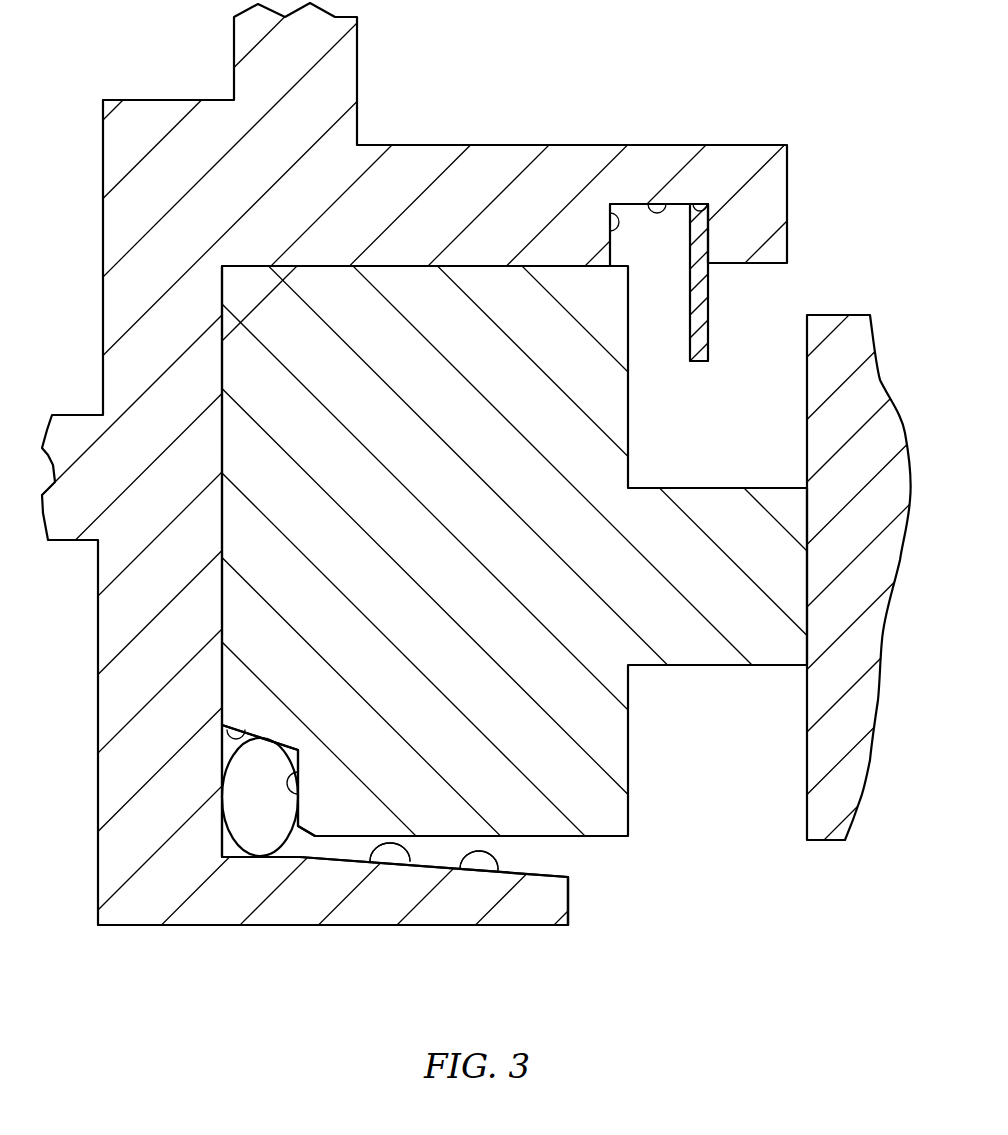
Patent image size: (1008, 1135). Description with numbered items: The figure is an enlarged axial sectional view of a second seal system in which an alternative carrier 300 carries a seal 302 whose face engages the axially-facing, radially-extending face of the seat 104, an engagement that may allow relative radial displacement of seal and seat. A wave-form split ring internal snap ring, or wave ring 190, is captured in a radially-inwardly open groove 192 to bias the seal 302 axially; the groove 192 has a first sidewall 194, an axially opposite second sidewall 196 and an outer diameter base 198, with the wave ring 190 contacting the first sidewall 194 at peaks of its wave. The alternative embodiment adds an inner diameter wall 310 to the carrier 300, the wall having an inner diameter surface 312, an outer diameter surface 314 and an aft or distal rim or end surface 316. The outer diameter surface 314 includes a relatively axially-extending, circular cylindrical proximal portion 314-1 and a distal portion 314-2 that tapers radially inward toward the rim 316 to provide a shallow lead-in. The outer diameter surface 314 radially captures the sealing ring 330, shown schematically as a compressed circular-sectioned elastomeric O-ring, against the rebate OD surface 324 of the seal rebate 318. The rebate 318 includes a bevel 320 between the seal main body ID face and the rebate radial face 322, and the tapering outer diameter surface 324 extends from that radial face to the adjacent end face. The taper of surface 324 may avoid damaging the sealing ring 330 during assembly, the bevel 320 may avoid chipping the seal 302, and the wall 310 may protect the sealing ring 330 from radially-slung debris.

The carrier 300 is at (80, 681).
The seal 302 is at (388, 567).
The seat 104 is at (823, 872).
The wave ring 190 is at (723, 355).
The groove 192 is at (640, 242).
The first sidewall 194 is at (700, 204).
The second sidewall 196 is at (610, 212).
The outer diameter base 198 is at (662, 205).
The inner diameter wall 310 is at (307, 898).
The inner diameter surface 312 is at (340, 928).
The outer diameter surface 314 is at (410, 861).
The proximal portion 314-1 is at (322, 857).
The distal portion 314-2 is at (498, 870).
The end surface 316 is at (575, 897).
The rebate 318 is at (224, 741).
The bevel 320 is at (305, 838).
The rebate radial face 322 is at (293, 767).
The rebate OD surface 324 is at (231, 718).
The sealing ring 330 is at (220, 852).